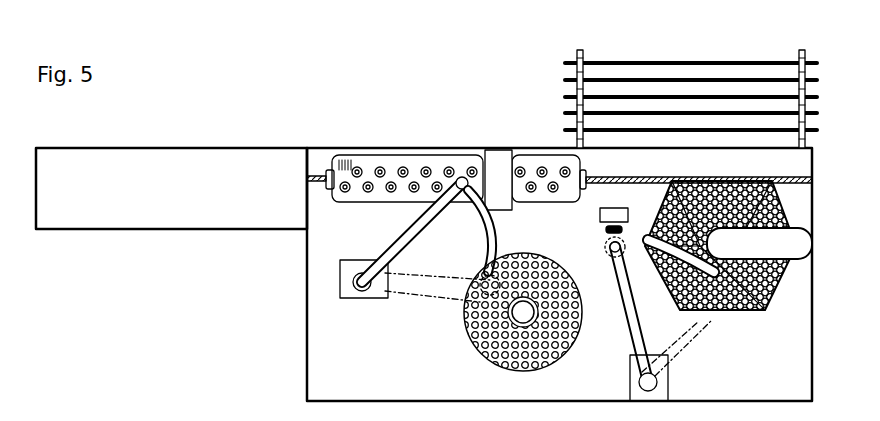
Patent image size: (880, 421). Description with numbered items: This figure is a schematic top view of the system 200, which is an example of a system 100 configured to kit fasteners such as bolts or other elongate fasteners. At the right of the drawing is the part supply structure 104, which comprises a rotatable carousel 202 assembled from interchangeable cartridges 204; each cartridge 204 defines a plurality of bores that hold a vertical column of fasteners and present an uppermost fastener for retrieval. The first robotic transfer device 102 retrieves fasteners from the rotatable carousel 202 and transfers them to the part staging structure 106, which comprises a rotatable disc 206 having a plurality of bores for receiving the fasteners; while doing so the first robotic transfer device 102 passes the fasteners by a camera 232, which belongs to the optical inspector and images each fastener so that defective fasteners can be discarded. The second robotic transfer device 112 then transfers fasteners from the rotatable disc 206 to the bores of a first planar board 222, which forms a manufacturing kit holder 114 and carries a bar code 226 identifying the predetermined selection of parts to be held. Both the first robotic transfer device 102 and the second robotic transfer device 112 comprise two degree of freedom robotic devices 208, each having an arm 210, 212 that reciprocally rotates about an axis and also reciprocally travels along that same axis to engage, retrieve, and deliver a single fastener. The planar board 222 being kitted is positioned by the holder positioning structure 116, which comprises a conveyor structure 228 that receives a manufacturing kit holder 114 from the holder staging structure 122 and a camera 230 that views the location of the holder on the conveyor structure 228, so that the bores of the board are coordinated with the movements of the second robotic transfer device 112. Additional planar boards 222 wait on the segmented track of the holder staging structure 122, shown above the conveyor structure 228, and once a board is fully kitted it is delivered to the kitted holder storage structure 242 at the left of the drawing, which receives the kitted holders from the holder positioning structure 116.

The system 100 is at (200, 96).
The system 200 is at (252, 105).
The kitted holder storage structure 242 is at (101, 148).
The manufacturing kit holder 114 is at (678, 44).
The holder staging structure 122 is at (532, 86).
The planar board 222 is at (384, 156).
The bar code 226 is at (337, 163).
The camera 230 is at (518, 148).
The conveyor structure 228 is at (640, 177).
The holder positioning structure 116 is at (789, 174).
The rotatable carousel 202 is at (760, 303).
The cartridge 204 is at (762, 212).
The part supply structure 104 is at (755, 336).
The second robotic transfer device 112 is at (352, 302).
The two degree of freedom robotic device 208 is at (392, 238).
The arm 212 is at (405, 254).
The part staging structure 106 is at (470, 358).
The rotatable disc 206 is at (526, 370).
The camera 232 is at (598, 215).
The arm 210 is at (612, 282).
The first robotic transfer device 102 is at (670, 389).